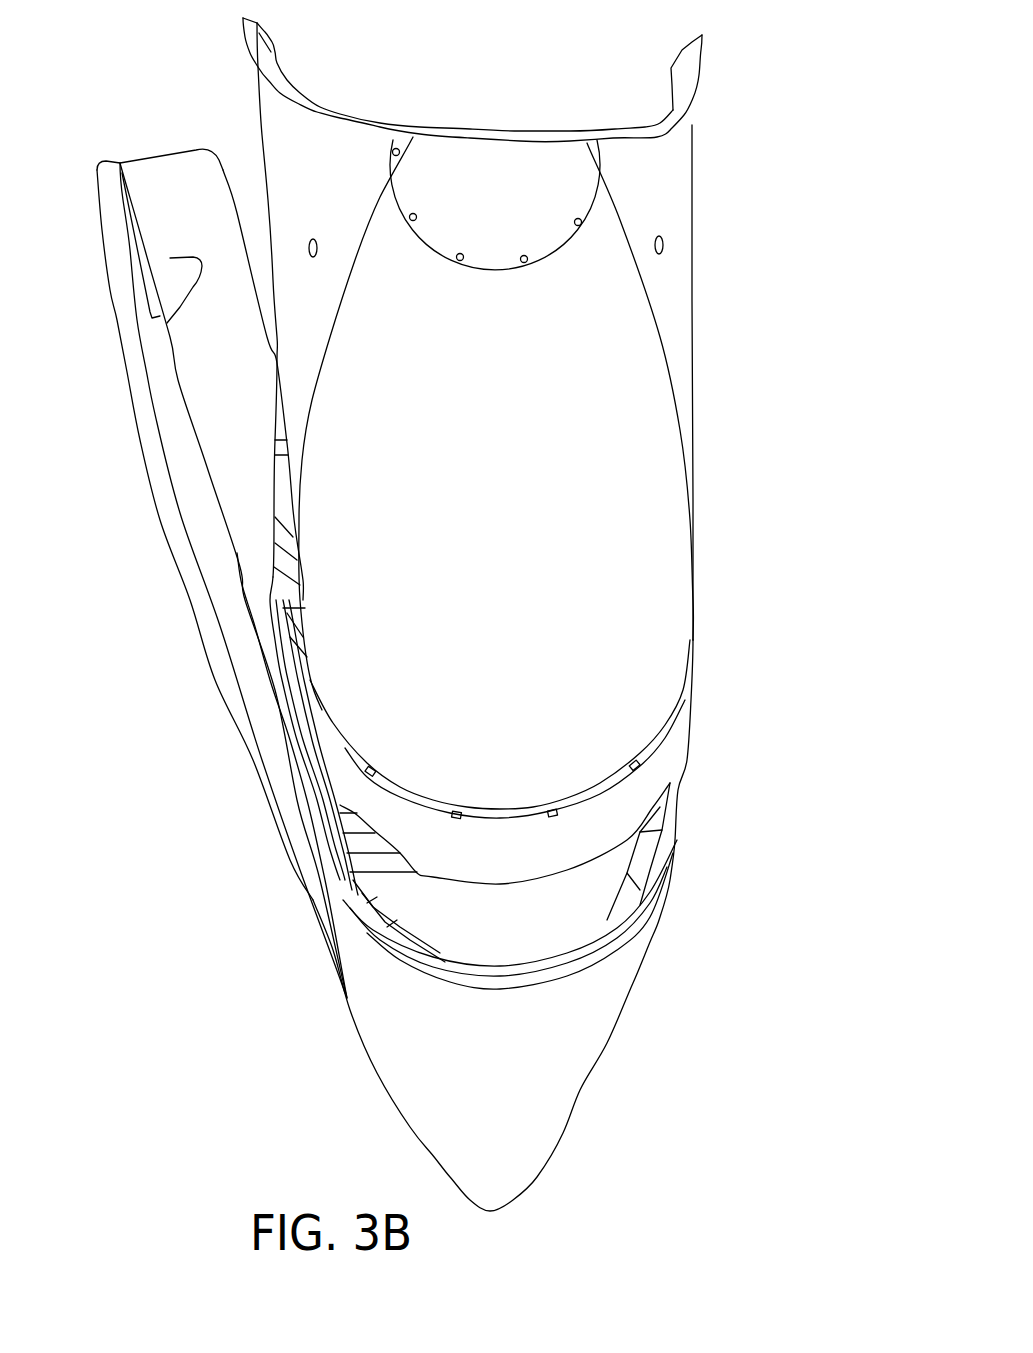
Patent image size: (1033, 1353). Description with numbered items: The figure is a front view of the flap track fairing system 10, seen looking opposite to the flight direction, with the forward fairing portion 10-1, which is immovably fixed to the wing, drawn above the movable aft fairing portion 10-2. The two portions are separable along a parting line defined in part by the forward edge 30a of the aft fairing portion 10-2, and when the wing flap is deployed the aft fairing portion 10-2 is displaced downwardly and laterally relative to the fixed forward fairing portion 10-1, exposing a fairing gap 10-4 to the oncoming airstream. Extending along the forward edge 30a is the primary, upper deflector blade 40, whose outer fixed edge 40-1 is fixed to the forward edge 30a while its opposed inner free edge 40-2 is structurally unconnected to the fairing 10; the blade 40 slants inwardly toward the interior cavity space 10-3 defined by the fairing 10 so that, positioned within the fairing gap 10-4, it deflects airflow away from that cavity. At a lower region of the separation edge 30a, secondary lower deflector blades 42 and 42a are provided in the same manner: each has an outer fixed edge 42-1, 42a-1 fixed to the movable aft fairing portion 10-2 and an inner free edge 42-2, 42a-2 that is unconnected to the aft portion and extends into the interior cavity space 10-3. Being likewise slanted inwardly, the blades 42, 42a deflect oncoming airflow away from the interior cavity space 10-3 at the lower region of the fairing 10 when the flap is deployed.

The fairing system 10 is at (767, 583).
The forward fairing portion 10-1 is at (519, 589).
The movable aft fairing portion 10-2 is at (495, 1087).
The interior cavity space 10-3 is at (528, 932).
The fairing gap 10-4 is at (223, 93).
The forward edge 30a is at (168, 402).
The primary deflector blade 40 is at (212, 347).
The outer fixed edge 40-1 is at (170, 258).
The inner free edge 40-2 is at (237, 213).
The secondary deflector blade 42 is at (307, 728).
The outer fixed edge 42-1 is at (303, 787).
The inner free edge 42-2 is at (300, 690).
The secondary deflector blade 42a is at (280, 620).
The outer fixed edge 42a-1 is at (272, 666).
The inner free edge 42a-2 is at (283, 608).